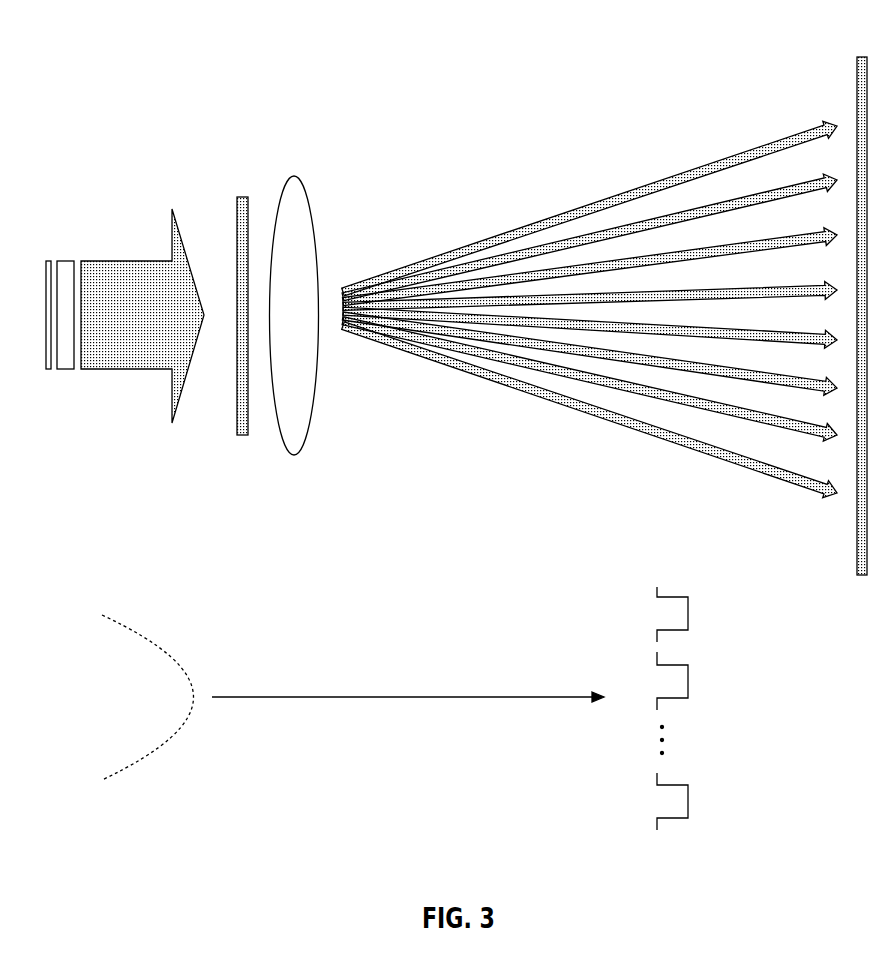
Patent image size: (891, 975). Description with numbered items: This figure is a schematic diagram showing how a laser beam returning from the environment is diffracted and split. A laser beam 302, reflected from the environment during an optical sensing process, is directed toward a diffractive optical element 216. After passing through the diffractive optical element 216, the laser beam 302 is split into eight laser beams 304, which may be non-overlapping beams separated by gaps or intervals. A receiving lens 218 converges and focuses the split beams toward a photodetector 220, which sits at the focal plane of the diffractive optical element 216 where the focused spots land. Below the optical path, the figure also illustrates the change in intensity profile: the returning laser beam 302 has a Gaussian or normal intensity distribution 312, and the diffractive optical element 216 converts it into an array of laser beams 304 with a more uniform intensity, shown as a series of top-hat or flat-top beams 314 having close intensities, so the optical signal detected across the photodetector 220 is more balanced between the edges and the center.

The laser beam 302 is at (113, 259).
The diffractive optical element 216 is at (239, 197).
The receiving lens 218 is at (293, 177).
The laser beams 304 is at (600, 196).
The photodetector 220 is at (861, 57).
The Gaussian or normal intensity distribution 312 is at (124, 630).
The top-hat beams or flat-top beams 314 is at (678, 593).